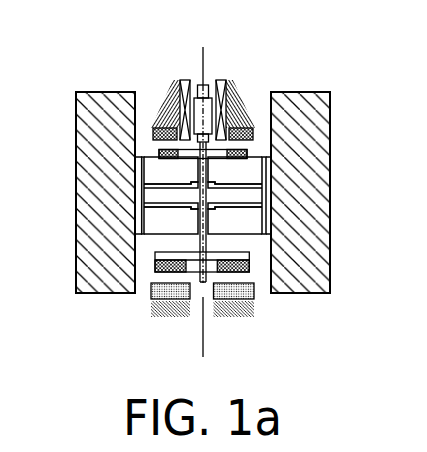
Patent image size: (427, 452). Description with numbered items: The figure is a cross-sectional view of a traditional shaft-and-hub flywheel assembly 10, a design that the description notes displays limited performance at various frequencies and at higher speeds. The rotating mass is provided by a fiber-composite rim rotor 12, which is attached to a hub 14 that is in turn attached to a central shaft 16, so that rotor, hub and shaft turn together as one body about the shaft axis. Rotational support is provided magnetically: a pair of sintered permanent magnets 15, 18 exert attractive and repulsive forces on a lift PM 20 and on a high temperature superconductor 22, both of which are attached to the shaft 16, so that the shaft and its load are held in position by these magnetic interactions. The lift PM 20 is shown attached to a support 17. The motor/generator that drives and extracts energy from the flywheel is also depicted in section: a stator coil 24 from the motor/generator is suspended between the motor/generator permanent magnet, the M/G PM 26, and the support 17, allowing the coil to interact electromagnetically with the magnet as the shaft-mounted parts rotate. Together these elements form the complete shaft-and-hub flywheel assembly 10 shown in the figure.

The shaft-and-hub flywheel assembly 10 is at (65, 69).
The fiber-composite rim rotor 12 is at (302, 142).
The hub 14 is at (247, 194).
The sintered permanent magnet 15 is at (152, 266).
The shaft 16 is at (207, 226).
The support 17 is at (232, 98).
The sintered permanent magnet 18 is at (160, 153).
The lift PM 20 is at (152, 134).
The high temperature superconductor 22 is at (150, 293).
The stator coil 24 is at (221, 82).
The M/G PM 26 is at (197, 109).